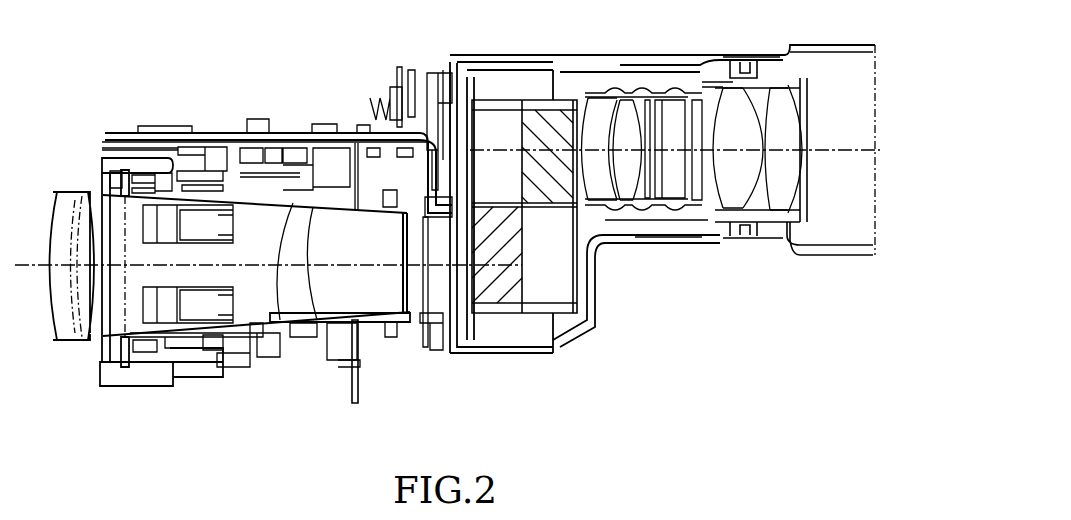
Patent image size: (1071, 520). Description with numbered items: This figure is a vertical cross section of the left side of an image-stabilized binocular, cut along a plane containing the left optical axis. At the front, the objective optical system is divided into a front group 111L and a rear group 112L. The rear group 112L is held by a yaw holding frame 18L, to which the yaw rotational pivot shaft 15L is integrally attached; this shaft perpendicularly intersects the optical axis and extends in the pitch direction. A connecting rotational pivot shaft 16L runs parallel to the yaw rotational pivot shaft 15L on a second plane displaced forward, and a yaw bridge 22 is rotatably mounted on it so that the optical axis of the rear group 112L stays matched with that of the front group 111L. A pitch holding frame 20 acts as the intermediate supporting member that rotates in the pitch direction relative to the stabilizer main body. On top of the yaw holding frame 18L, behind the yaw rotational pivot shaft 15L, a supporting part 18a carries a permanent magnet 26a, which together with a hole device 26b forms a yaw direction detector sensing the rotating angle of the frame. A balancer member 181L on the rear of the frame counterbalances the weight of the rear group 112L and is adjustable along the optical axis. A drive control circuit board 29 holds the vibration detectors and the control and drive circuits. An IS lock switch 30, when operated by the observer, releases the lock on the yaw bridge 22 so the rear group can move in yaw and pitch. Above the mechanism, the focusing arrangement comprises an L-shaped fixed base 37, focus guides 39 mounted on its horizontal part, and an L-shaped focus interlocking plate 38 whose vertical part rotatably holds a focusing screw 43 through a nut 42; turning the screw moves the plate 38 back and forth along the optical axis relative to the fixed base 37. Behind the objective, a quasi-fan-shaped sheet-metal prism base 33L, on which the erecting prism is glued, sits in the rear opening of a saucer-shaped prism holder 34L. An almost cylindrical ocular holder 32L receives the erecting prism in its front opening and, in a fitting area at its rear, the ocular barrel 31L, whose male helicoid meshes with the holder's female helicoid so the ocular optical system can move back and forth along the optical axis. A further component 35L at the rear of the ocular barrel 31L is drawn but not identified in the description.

The front group 111L is at (55, 212).
The rear group 112L is at (85, 197).
The connecting rotational pivot shaft 16L is at (122, 393).
The yaw bridge 22 is at (143, 362).
The yaw rotational pivot shaft 15L is at (253, 388).
The permanent magnet 26a is at (310, 353).
The hole device 26b is at (310, 187).
The pitch holding frame 20 is at (293, 173).
The supporting part 18a is at (325, 333).
The drive control circuit board 29 is at (352, 405).
The yaw holding frame 18L is at (373, 323).
The balancer member 181L is at (393, 338).
The focus interlocking plate 38 is at (107, 130).
The focus guides 39 is at (323, 124).
The IS lock switch 30 is at (250, 119).
The focusing screw 43 is at (377, 98).
The nut 42 is at (400, 67).
The fixed base 37 is at (433, 73).
The prism base 33L is at (473, 77).
The prism holder 34L is at (510, 355).
The ocular holder 32L is at (633, 242).
The ocular barrel 31L is at (777, 222).
The cap 35L is at (833, 255).